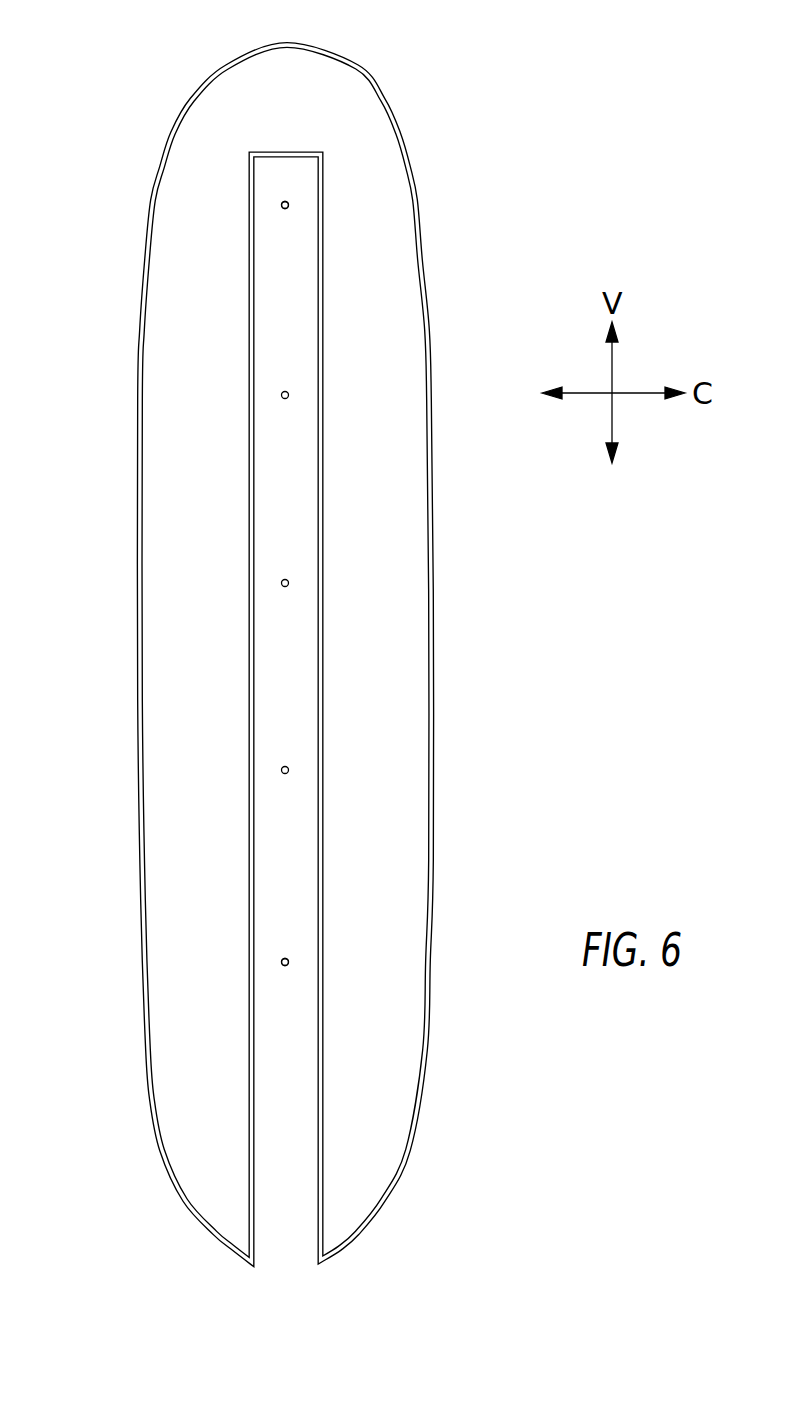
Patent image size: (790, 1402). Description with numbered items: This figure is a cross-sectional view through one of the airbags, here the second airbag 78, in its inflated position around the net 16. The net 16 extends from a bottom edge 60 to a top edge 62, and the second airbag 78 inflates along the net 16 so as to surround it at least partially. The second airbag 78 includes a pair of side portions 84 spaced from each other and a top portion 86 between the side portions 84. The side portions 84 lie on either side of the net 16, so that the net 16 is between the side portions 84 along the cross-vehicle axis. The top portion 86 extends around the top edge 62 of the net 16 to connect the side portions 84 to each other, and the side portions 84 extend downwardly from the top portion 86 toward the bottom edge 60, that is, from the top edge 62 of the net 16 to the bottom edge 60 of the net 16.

The net 16 is at (278, 215).
The bottom edge 60 is at (288, 958).
The top edge 62 is at (287, 201).
The second airbag 78 is at (428, 212).
The side portions 84 is at (386, 695).
The top portion 86 is at (272, 110).